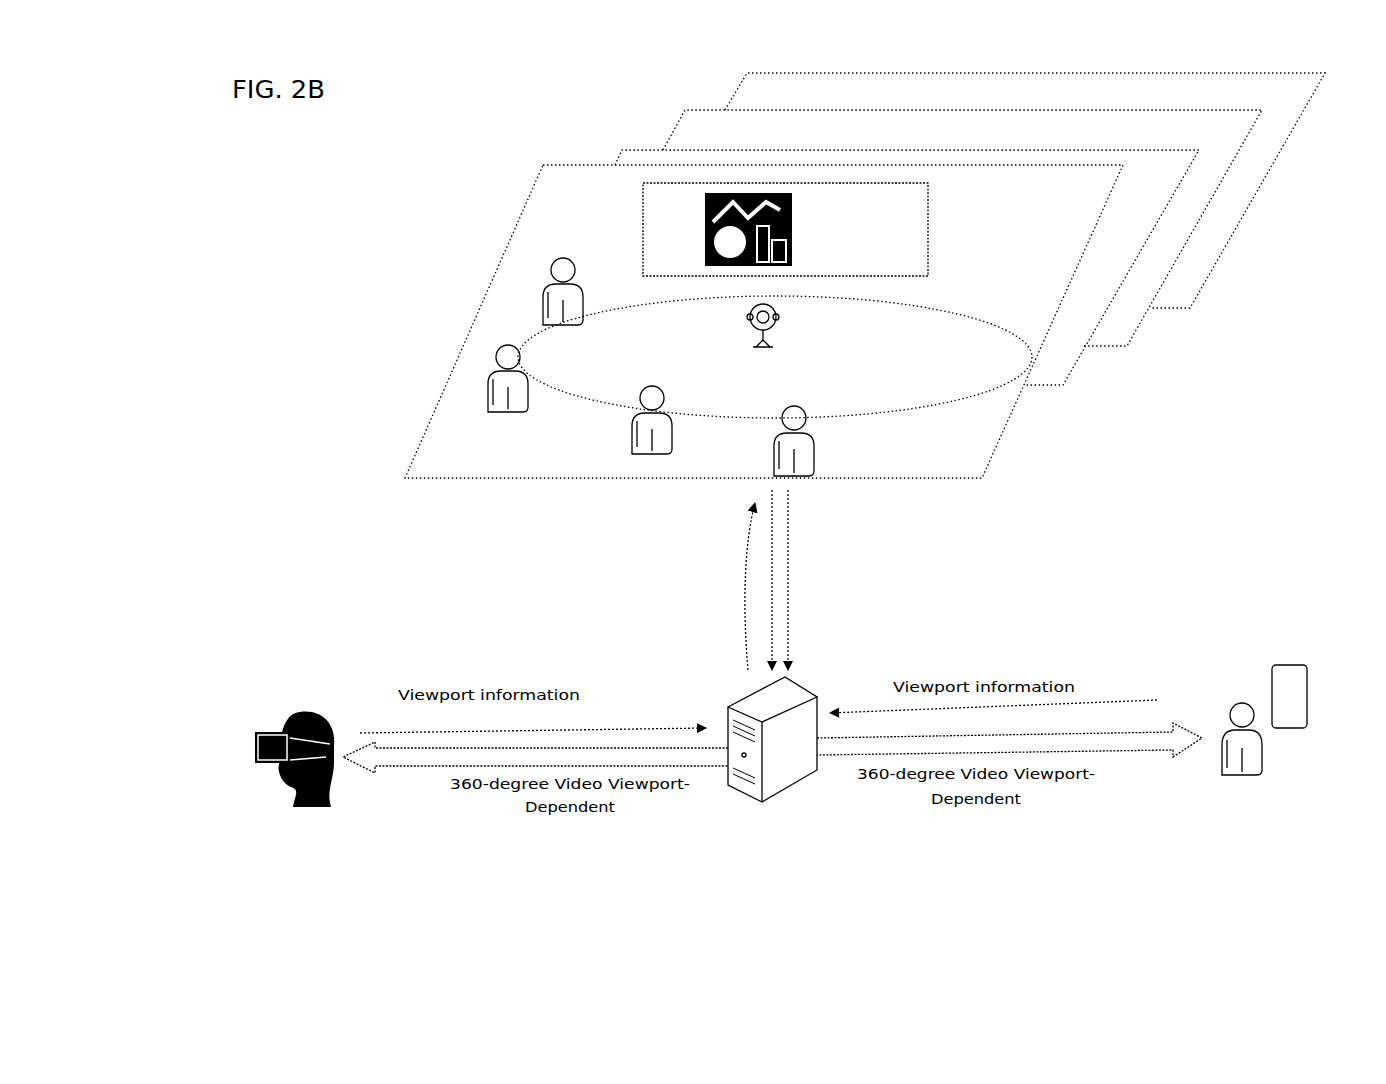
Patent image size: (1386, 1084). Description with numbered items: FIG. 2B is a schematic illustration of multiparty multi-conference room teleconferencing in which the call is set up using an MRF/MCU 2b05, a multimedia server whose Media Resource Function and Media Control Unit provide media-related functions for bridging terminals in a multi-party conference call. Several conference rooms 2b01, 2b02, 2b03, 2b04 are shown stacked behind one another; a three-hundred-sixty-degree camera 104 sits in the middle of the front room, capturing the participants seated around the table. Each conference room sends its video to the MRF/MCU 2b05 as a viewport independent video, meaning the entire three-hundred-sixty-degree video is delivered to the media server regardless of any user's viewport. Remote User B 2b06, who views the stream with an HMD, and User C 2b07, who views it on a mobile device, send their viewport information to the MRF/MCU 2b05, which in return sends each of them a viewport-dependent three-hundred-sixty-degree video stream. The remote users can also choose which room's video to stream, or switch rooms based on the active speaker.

The conference room 2b01 is at (483, 297).
The conference room 2b02 is at (613, 155).
The conference room 2b03 is at (680, 115).
The conference room 2b04 is at (753, 95).
The 360-degree camera 104 is at (777, 328).
The MRF/MCU 2b05 is at (728, 701).
The User B 2b06 is at (250, 730).
The User C 2b07 is at (1272, 666).